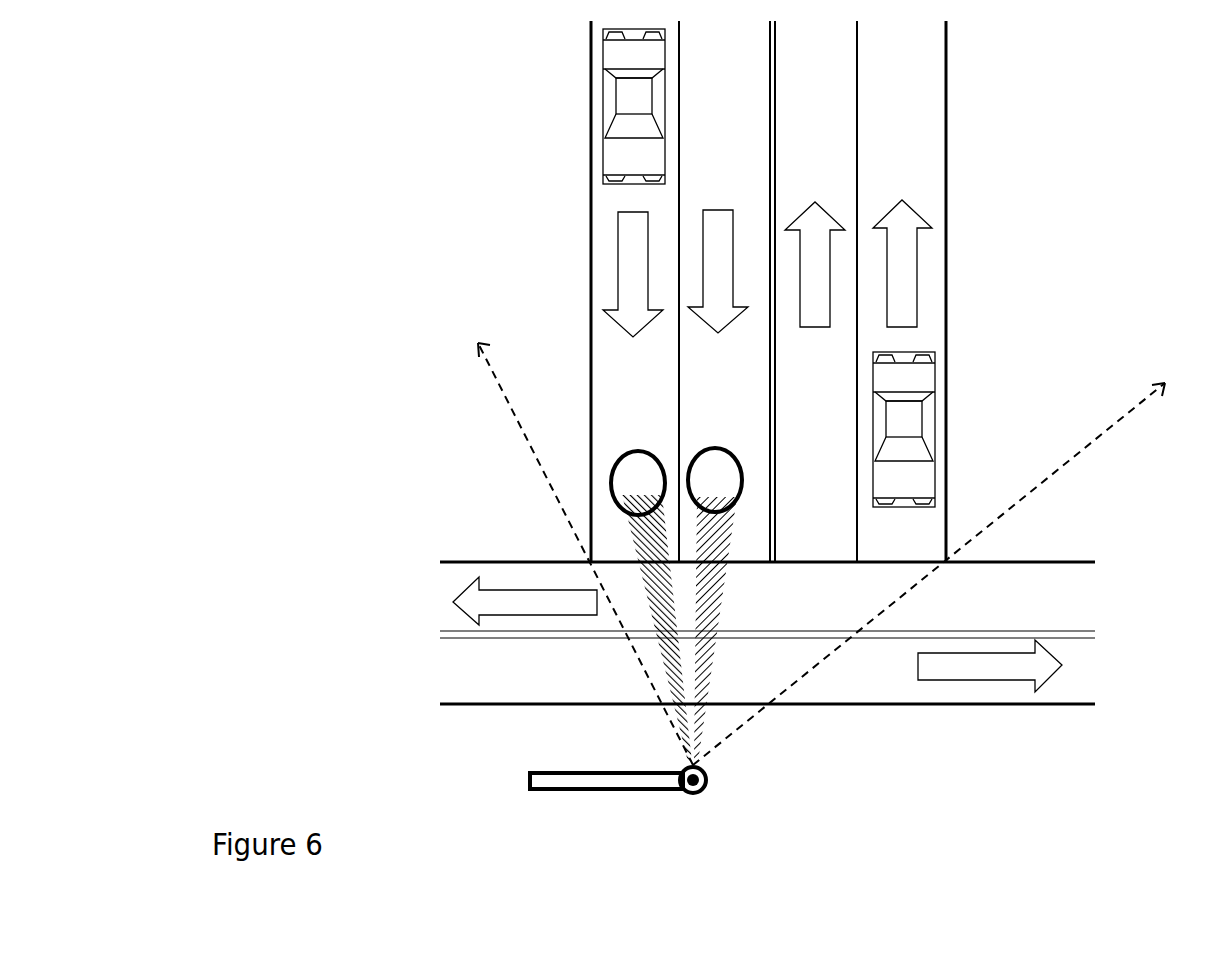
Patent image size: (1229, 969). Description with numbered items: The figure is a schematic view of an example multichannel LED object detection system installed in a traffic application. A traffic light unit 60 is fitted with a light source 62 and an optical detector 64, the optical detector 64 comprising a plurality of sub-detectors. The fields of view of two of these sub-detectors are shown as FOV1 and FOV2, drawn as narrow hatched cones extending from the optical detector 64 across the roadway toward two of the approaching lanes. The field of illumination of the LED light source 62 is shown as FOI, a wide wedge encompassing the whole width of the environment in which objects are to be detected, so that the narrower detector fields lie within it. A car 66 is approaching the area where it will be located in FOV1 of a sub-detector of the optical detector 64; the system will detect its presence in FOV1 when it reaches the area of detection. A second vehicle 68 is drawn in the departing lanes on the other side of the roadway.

The traffic light unit 60 is at (555, 769).
The light source 62 is at (710, 780).
The optical detector 64 is at (687, 797).
The car 66 is at (610, 88).
The vehicle in departing lane 68 is at (928, 366).
The field-of-view of first sub-detector FOV1 is at (625, 545).
The field-of-view of second sub-detector FOV2 is at (730, 545).
The field of illumination FOI is at (1072, 458).